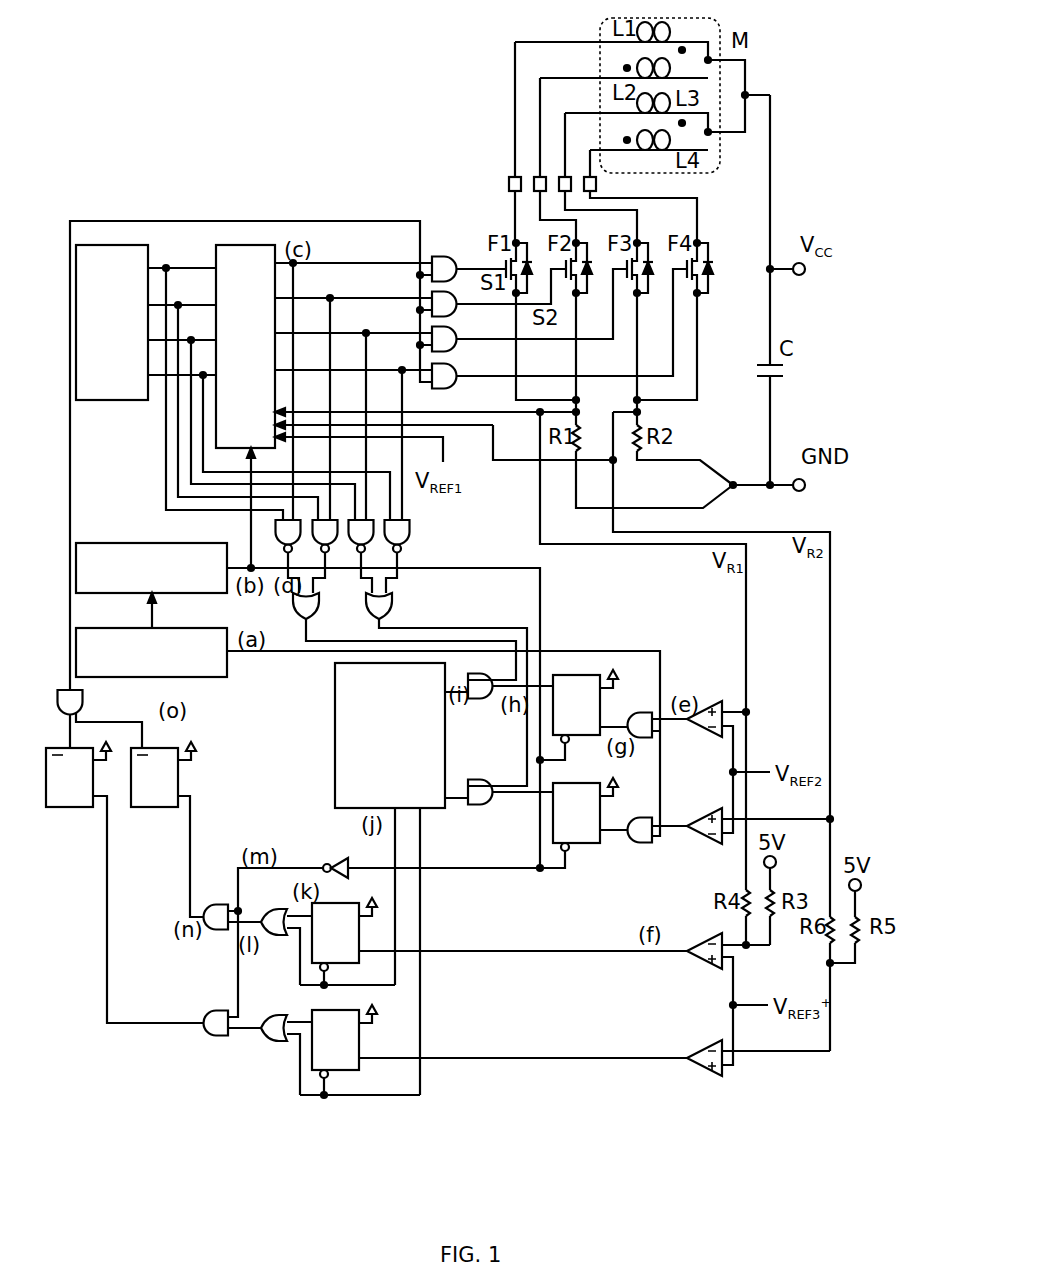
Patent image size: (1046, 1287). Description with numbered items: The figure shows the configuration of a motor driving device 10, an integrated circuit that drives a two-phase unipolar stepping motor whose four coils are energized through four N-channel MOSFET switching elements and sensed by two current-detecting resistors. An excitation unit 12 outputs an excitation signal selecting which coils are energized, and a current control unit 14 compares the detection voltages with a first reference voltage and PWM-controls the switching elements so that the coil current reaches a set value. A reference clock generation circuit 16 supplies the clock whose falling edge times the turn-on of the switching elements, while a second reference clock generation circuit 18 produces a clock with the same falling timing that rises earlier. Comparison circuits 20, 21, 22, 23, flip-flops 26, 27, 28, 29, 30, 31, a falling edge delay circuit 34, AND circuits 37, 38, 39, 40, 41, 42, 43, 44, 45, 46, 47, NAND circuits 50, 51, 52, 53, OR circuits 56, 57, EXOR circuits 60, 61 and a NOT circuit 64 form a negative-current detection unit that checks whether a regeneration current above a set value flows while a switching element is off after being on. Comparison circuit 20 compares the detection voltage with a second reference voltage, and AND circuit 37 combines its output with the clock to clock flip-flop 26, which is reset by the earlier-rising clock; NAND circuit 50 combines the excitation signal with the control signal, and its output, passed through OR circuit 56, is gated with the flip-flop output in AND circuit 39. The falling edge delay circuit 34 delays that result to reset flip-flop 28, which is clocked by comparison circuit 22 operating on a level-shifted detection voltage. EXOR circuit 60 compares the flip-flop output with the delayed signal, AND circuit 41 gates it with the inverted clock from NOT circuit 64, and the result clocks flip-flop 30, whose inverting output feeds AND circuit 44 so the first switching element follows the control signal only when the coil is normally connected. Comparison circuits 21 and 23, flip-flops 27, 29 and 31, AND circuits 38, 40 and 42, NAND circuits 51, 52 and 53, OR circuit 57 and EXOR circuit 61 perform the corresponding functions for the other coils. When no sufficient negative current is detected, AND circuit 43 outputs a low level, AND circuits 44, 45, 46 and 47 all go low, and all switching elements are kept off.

The motor driving device 10 is at (349, 147).
The excitation unit 12 is at (148, 258).
The current control unit 14 is at (250, 245).
The reference clock generation circuit 16 is at (227, 670).
The reference clock generation circuit 18 is at (110, 543).
The comparison circuit 20 is at (705, 700).
The comparison circuit 21 is at (705, 808).
The comparison circuit 22 is at (712, 937).
The comparison circuit 23 is at (712, 1043).
The flip-flop 26 is at (578, 675).
The flip-flop 27 is at (578, 845).
The flip-flop 28 is at (359, 936).
The flip-flop 29 is at (359, 1042).
The flip-flop 30 is at (155, 808).
The flip-flop 31 is at (70, 808).
The falling edge delay circuit 34 is at (335, 713).
The AND circuit 37 is at (640, 713).
The AND circuit 38 is at (640, 843).
The AND circuit 39 is at (490, 702).
The AND circuit 40 is at (490, 804).
The AND circuit 41 is at (215, 931).
The AND circuit 42 is at (215, 1037).
The AND circuit 43 is at (92, 692).
The AND circuit 44 is at (436, 257).
The AND circuit 45 is at (446, 316).
The AND circuit 46 is at (446, 351).
The AND circuit 47 is at (446, 388).
The NAND circuit 50 is at (275, 532).
The NAND circuit 51 is at (338, 518).
The NAND circuit 52 is at (370, 518).
The NAND circuit 53 is at (410, 532).
The OR circuit 56 is at (318, 605).
The OR circuit 57 is at (391, 605).
The EXOR circuit 60 is at (272, 937).
The EXOR circuit 61 is at (270, 1043).
The NOT circuit 64 is at (336, 858).